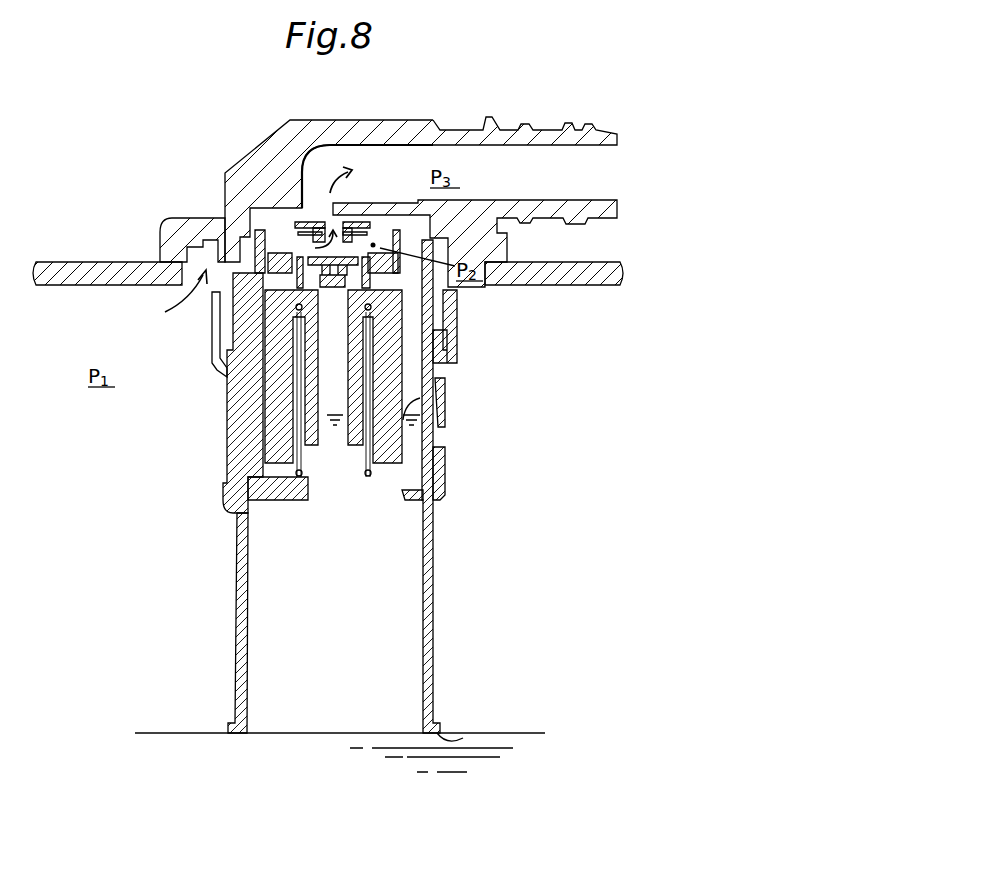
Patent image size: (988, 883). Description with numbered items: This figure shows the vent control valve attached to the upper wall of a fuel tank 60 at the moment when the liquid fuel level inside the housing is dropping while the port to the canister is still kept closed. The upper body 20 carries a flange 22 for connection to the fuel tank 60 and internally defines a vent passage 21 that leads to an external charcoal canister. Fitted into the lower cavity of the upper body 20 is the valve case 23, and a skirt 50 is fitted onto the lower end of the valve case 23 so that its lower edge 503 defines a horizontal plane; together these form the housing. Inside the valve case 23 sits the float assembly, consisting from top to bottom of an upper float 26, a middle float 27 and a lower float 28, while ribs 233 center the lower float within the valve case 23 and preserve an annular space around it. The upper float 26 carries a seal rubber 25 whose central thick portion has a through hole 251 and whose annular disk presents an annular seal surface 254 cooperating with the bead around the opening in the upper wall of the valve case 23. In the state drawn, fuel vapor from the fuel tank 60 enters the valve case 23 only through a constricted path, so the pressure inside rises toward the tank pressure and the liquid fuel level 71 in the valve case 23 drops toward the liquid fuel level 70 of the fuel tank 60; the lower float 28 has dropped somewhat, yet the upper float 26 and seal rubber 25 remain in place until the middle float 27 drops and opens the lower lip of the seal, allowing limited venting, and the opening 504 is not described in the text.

The upper body 20 is at (247, 160).
The vent passage 21 is at (533, 130).
The flange 22 is at (168, 230).
The valve case 23 is at (232, 400).
The seal rubber 25 is at (350, 221).
The upper float 26 is at (392, 236).
The middle float 27 is at (458, 312).
The lower float 28 is at (388, 383).
The skirt 50 is at (434, 612).
The fuel tank 60 is at (582, 286).
The liquid fuel level 70 is at (510, 733).
The liquid fuel level in the valve case 71 is at (437, 400).
The ribs 233 is at (248, 440).
The through hole 251 is at (330, 222).
The annular seal surface 254 is at (283, 136).
The lower edge 503 is at (462, 738).
The side hole 504 is at (402, 497).